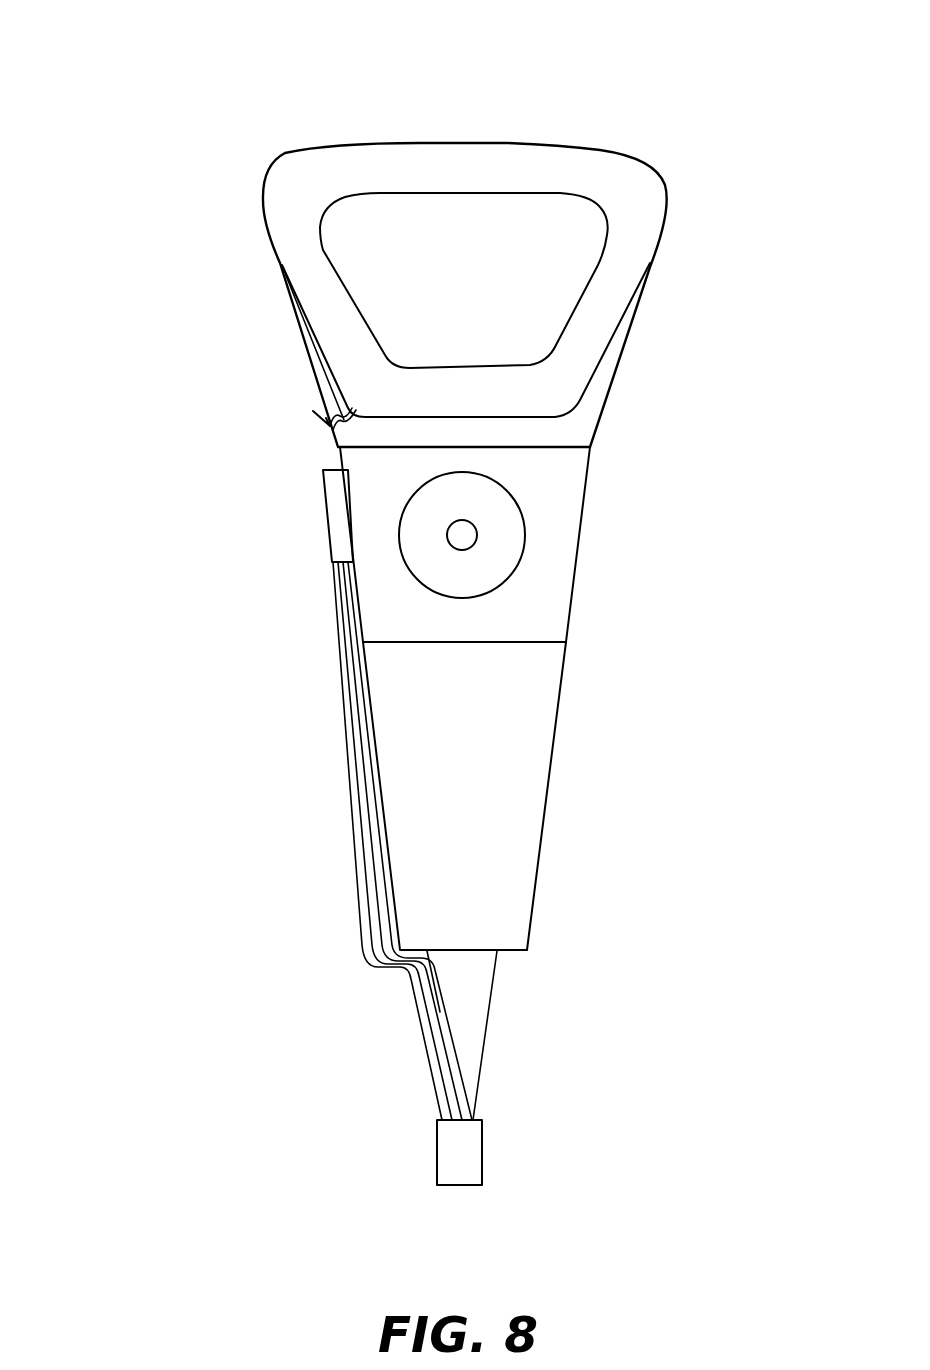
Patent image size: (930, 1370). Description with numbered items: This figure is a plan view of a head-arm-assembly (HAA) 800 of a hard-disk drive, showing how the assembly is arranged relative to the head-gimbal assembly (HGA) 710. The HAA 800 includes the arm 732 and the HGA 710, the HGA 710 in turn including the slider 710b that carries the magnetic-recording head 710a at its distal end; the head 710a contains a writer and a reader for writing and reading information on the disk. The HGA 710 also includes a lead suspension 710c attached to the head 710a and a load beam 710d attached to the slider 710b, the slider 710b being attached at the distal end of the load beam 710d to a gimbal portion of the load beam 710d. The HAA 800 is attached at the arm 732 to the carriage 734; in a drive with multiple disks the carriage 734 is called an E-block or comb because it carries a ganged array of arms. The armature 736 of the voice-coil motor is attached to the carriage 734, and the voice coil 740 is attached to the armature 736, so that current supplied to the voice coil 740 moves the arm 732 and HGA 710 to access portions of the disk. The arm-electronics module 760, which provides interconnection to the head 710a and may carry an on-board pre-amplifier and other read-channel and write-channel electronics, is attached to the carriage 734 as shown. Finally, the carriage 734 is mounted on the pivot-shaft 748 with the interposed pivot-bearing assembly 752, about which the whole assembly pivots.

The head-arm-assembly 800 is at (162, 116).
The voice coil 740 is at (327, 299).
The armature 736 is at (332, 380).
The arm-electronics module 760 is at (345, 527).
The pivot-shaft 748 is at (463, 530).
The pivot-bearing assembly 752 is at (502, 537).
The carriage 734 is at (547, 590).
The arm 732 is at (497, 742).
The head-gimbal assembly 710 is at (263, 935).
The magnetic-recording head 710a is at (450, 1170).
The slider 710b is at (433, 1148).
The lead suspension 710c is at (433, 1052).
The load beam 710d is at (463, 1010).